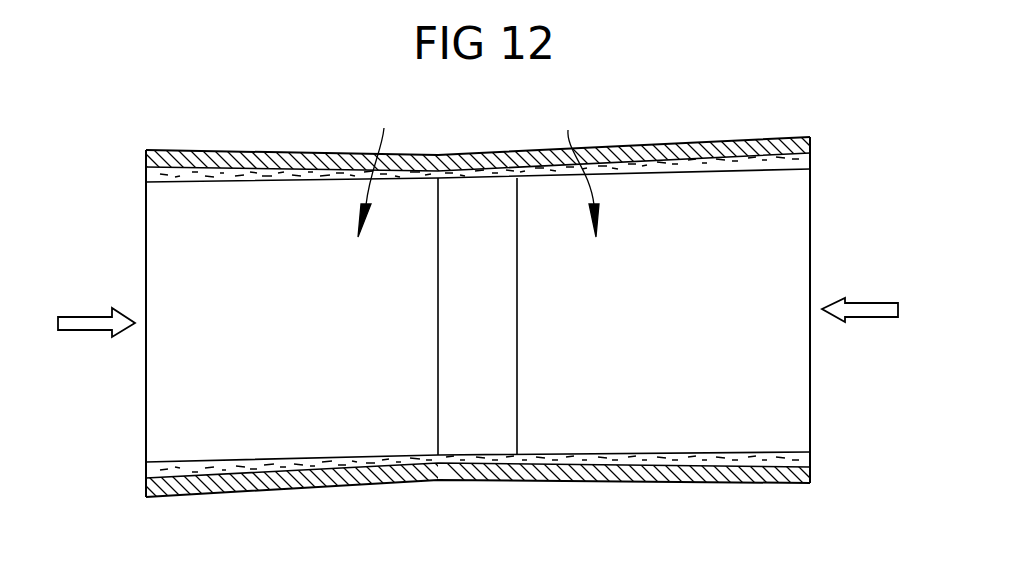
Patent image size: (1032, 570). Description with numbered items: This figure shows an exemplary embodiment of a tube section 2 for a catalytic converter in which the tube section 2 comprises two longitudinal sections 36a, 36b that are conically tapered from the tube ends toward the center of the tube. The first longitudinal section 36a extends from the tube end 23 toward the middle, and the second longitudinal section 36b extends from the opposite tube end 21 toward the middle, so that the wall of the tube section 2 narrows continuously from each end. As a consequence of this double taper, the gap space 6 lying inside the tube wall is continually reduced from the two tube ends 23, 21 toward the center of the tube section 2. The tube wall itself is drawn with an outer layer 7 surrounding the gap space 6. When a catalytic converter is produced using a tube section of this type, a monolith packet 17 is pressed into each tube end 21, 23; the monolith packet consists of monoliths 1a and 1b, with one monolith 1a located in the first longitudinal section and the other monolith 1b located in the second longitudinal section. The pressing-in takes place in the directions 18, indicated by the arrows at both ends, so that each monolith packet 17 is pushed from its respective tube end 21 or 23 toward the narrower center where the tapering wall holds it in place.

The monolith 1a is at (277, 228).
The monolith 1b is at (677, 218).
The tube section 2 is at (248, 488).
The gap space 6 is at (190, 468).
The outer wall layer 7 is at (192, 163).
The monolith packet 17 is at (478, 168).
The pressing-in direction 18 is at (88, 318).
The tube end 21 is at (810, 372).
The tube end 23 is at (146, 388).
The longitudinal section 36a is at (363, 485).
The longitudinal section 36b is at (742, 485).